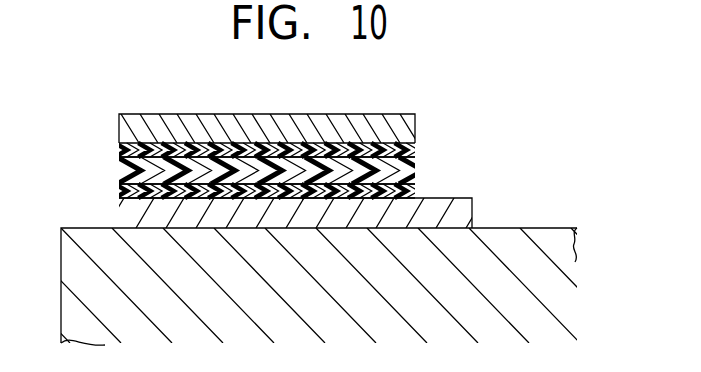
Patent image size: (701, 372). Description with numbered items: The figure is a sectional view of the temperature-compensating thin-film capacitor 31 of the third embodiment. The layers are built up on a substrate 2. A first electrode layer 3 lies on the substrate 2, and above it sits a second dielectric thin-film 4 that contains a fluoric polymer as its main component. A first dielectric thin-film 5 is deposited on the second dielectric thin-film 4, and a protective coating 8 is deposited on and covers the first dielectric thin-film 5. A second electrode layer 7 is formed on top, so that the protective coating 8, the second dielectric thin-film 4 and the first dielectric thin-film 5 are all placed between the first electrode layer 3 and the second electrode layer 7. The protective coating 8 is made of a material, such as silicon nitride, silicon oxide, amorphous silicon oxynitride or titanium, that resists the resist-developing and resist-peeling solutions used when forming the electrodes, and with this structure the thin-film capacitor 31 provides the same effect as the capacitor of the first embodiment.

The substrate 2 is at (61, 308).
The first electrode layer 3 is at (467, 213).
The second dielectric thin-film 4 is at (119, 191).
The first dielectric thin-film 5 is at (119, 170).
The protective coating 8 is at (119, 150).
The second electrode layer 7 is at (416, 126).
The thin-film capacitor 31 is at (605, 103).